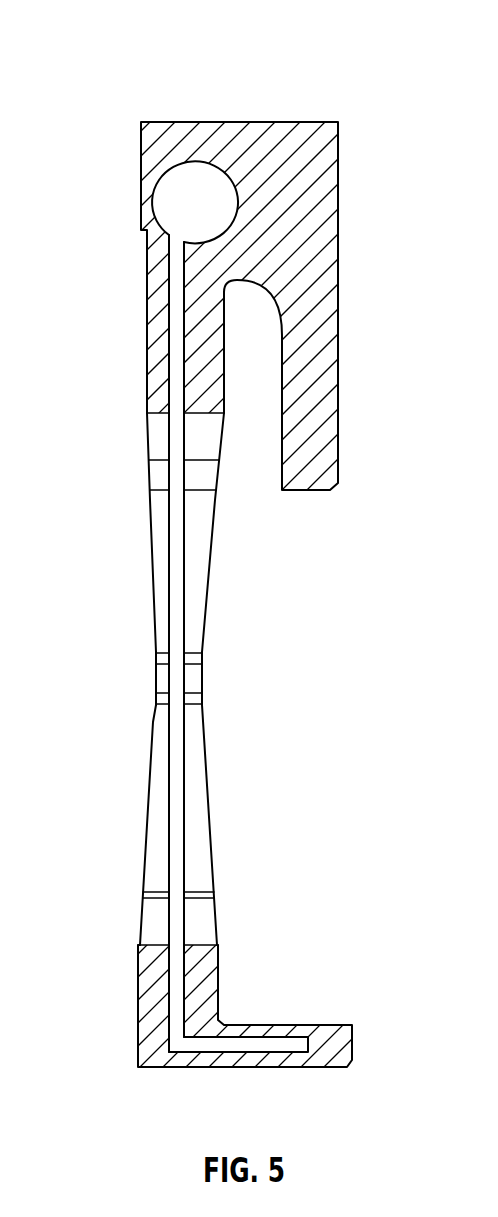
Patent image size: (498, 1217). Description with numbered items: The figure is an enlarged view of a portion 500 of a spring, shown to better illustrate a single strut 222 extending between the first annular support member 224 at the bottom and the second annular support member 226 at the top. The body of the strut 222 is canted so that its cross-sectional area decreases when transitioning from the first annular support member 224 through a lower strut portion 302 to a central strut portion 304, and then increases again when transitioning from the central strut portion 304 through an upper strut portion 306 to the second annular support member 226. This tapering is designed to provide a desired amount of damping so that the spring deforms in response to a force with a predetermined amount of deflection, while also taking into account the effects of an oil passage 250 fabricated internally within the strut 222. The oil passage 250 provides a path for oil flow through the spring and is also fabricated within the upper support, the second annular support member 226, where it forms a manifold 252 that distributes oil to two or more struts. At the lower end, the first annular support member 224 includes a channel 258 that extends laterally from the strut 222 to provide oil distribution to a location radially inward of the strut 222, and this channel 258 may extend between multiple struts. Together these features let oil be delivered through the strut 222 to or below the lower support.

The portion 500 is at (130, 48).
The manifold 252 is at (208, 180).
The second annular support member 226 is at (162, 323).
The oil passage 250 is at (177, 443).
The upper strut portion 306 is at (152, 513).
The central strut portion 304 is at (163, 677).
The lower strut portion 302 is at (147, 807).
The strut 222 is at (203, 718).
The first annular support member 224 is at (137, 1015).
The channel 258 is at (216, 1045).